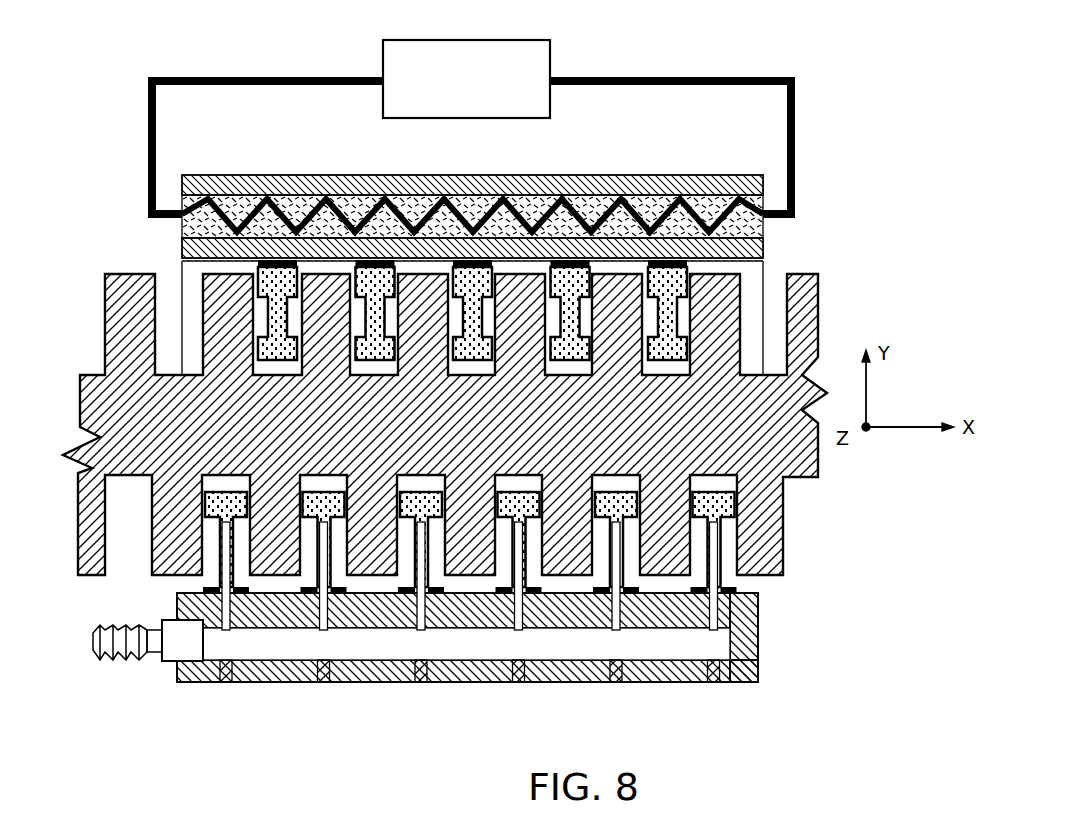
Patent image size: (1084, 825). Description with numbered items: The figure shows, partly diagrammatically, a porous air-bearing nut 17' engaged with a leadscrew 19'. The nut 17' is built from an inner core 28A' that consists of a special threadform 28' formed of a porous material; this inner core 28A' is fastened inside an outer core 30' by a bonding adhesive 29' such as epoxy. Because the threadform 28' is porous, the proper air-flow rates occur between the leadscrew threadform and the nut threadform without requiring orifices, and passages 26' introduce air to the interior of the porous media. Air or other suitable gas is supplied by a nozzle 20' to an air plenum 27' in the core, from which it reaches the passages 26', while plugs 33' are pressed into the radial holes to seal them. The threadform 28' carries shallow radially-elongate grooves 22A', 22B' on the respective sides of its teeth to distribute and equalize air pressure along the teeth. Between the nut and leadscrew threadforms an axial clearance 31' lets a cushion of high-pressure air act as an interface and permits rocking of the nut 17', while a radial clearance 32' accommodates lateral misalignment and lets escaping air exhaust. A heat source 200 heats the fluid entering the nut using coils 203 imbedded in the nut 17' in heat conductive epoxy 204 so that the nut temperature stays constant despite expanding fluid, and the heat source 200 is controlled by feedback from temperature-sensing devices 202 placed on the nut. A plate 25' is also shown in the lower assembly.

The heat source 200 is at (552, 58).
The temperature-sensing devices 202 is at (596, 187).
The coils 203 is at (248, 205).
The heat conductive epoxy 204 is at (180, 223).
The leadscrew 19' is at (477, 424).
The radially-elongate groove 22A' is at (174, 310).
The radially-elongate groove 22B' is at (222, 312).
The inner core 28A' is at (638, 302).
The threadform 28' is at (521, 542).
The support plate 25' is at (503, 604).
The passages 26' is at (470, 625).
The air plenum 27' is at (466, 682).
The nut 17' is at (507, 671).
The adhesive 29' is at (161, 658).
The nozzle 20' is at (118, 664).
The outer core 30' is at (467, 704).
The axial clearance 31' is at (470, 600).
The radial clearance 32' is at (596, 600).
The plugs 33' is at (451, 694).